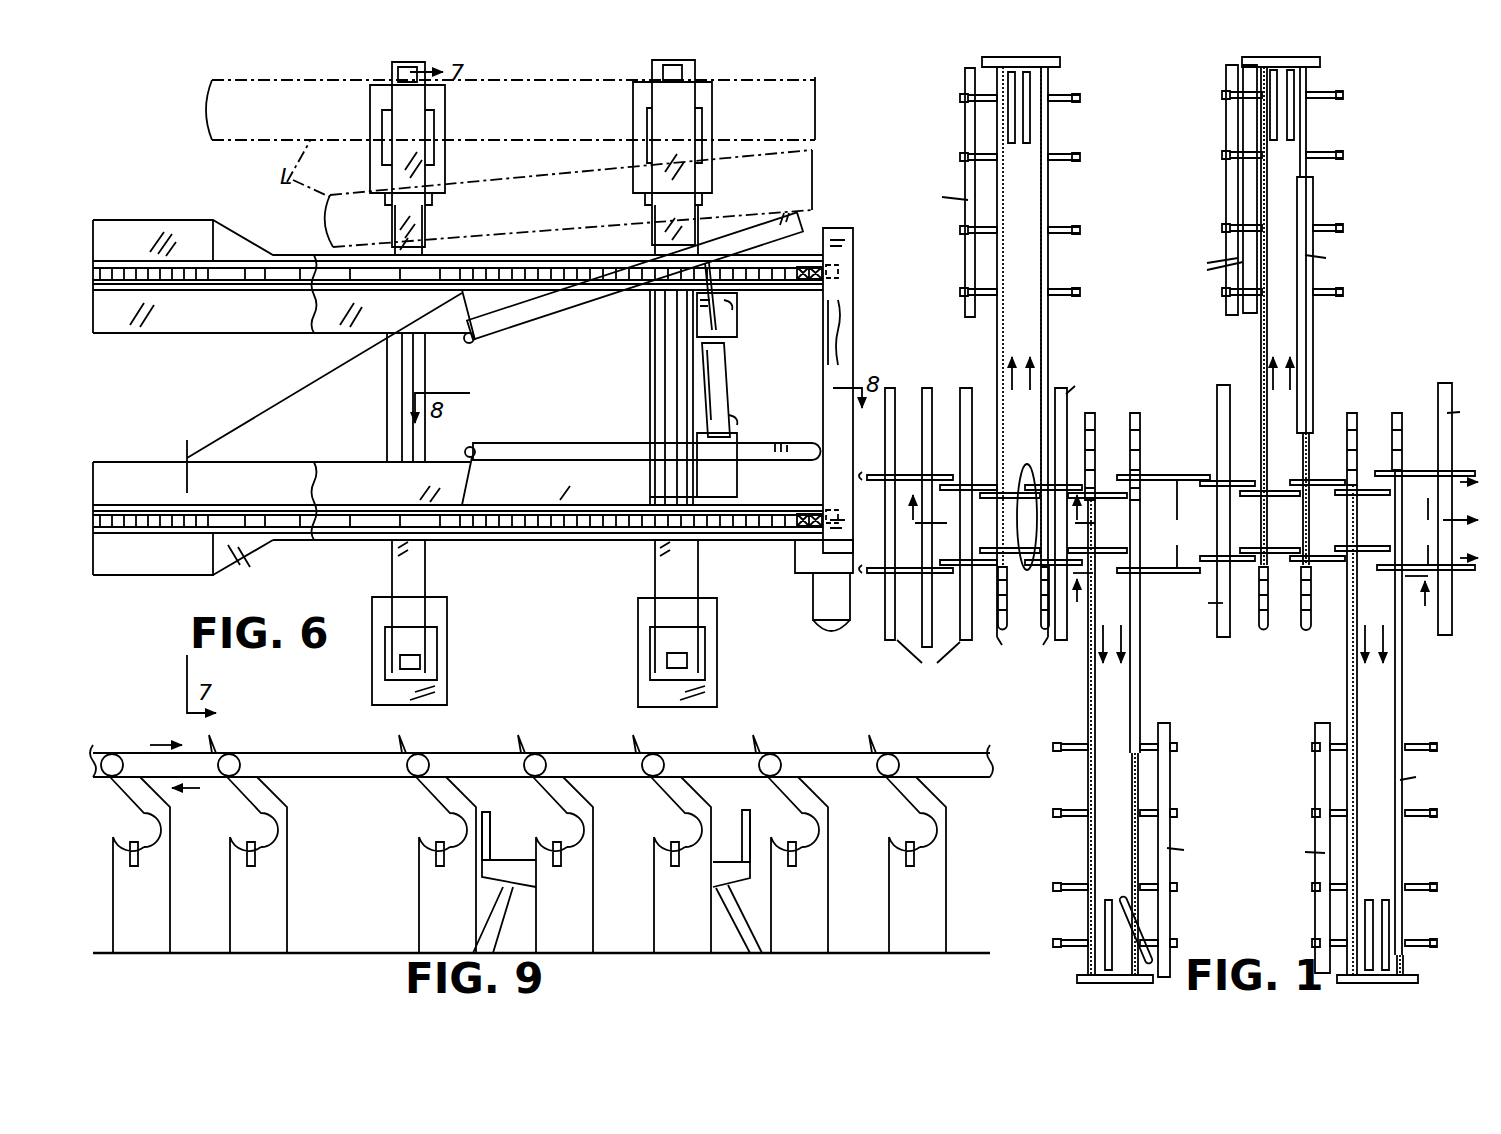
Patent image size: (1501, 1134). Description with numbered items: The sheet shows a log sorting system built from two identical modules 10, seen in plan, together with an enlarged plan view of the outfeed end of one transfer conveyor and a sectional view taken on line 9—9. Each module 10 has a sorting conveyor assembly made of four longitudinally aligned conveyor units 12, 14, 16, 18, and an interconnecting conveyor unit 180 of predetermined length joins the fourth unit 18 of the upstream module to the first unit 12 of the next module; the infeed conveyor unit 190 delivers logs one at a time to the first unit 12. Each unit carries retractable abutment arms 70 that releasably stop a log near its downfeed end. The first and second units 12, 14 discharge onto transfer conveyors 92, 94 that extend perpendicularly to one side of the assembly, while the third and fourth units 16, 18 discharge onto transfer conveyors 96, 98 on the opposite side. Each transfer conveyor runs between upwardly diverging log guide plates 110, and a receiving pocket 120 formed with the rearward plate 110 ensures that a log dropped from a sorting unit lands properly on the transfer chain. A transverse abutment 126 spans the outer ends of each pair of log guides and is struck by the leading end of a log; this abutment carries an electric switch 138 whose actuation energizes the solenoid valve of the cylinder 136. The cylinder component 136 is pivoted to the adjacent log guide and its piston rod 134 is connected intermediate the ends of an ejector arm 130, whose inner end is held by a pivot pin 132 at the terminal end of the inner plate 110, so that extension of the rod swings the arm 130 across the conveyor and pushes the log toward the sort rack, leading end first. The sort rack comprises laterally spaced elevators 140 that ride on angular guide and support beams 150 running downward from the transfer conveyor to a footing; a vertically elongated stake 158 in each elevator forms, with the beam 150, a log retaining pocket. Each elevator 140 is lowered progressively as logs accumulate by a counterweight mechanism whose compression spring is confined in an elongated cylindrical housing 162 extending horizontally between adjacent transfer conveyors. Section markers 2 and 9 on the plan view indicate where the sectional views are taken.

In FIG. 6, the plates 110 is at (137, 232).
In FIG. 1, the plates 110 is at (1007, 630).
In FIG. 6, the elevators 140 is at (615, 148).
In FIG. 9, the elevators 140 is at (512, 846).
In FIG. 1, the elevators 140 is at (953, 101).
In FIG. 6, the transverse abutment 126 is at (838, 232).
In FIG. 1, the transverse abutment 126 is at (1060, 62).
In FIG. 6, the electric switch 138 is at (840, 270).
In FIG. 6, the piston rod 134 is at (737, 312).
In FIG. 6, the cylindrical housing 162 is at (412, 368).
In FIG. 6, the cylinder component 136 is at (722, 380).
In FIG. 6, the pivot pin 132 is at (469, 344).
In FIG. 6, the ejector arm 130 is at (537, 308).
In FIG. 1, the ejector arm 130 is at (1017, 110).
In FIG. 6, the infeed conveyor unit 190 is at (862, 575).
In FIG. 6, the stake 158 is at (408, 662).
In FIG. 9, the stake 158 is at (482, 831).
In FIG. 9, the receiving pocket 120 is at (254, 828).
In FIG. 9, the abutment arm 70 is at (635, 742).
In FIG. 9, the guide and support beam 150 is at (500, 907).
In FIG. 1, the transfer conveyor 92 is at (990, 345).
In FIG. 1, the transfer conveyor 94 is at (1057, 329).
In FIG. 1, the transfer conveyor 96 is at (1082, 693).
In FIG. 1, the transfer conveyor 98 is at (1145, 488).
In FIG. 1, the module 10 is at (1113, 350).
In FIG. 1, the sorting conveyor unit 12 is at (950, 490).
In FIG. 1, the sorting conveyor unit 14 is at (988, 495).
In FIG. 1, the sorting conveyor unit 16 is at (1021, 497).
In FIG. 1, the sorting conveyor unit 18 is at (1107, 500).
In FIG. 1, the interconnecting conveyor unit 180 is at (1301, 523).
In FIG. 1, the section line 2 is at (1000, 521).
In FIG. 1, the section line 9 is at (1250, 589).